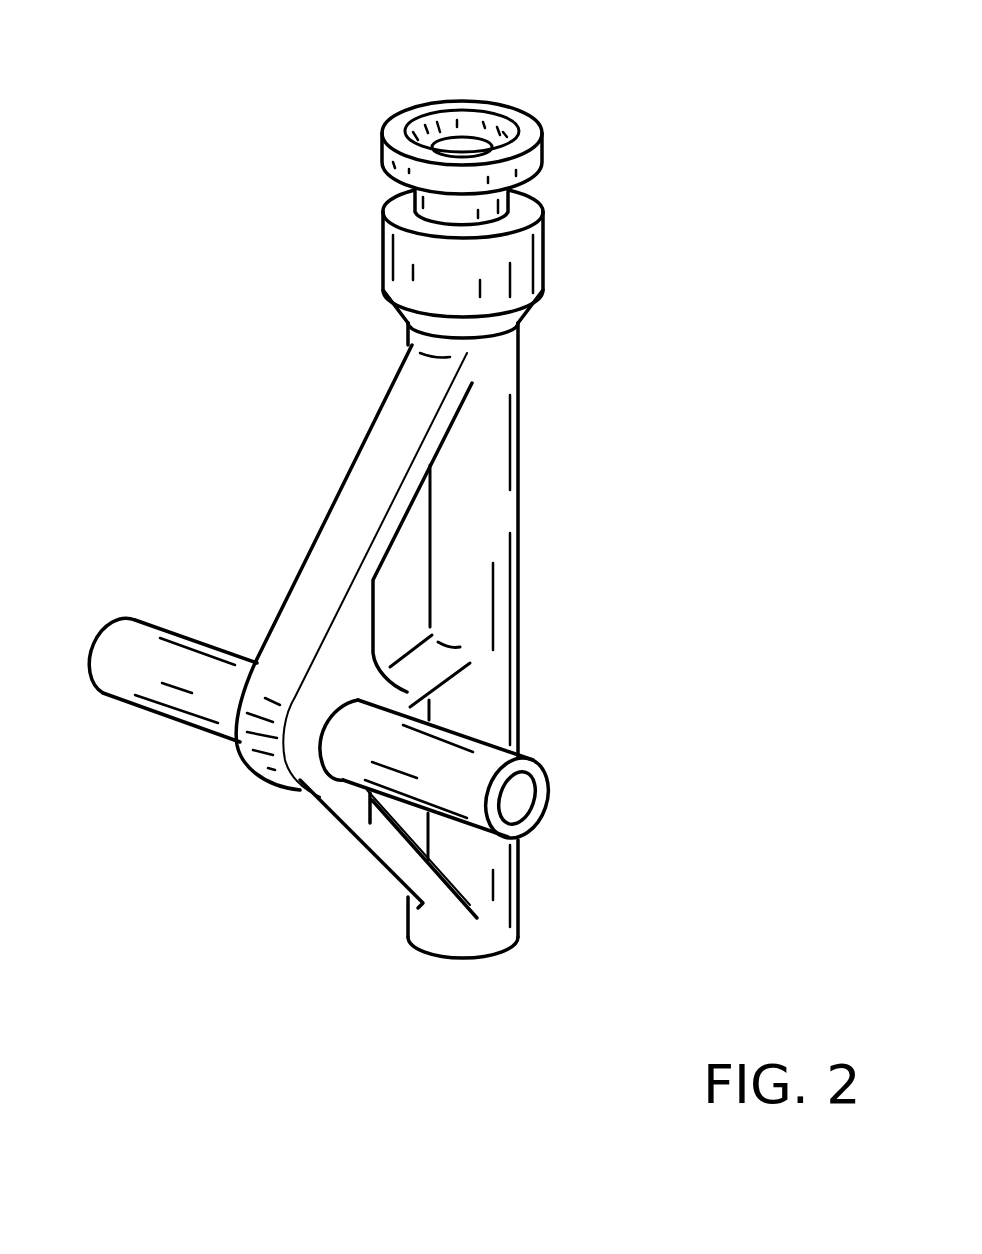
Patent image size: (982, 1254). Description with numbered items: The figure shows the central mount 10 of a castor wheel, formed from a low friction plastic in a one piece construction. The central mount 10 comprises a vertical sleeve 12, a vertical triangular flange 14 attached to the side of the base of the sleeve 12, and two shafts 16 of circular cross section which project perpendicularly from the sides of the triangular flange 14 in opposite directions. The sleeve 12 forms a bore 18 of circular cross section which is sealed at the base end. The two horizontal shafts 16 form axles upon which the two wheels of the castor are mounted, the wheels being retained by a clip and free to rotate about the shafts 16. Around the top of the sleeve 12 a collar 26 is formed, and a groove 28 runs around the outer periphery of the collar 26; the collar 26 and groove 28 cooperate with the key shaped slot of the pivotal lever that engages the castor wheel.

The central mount 10 is at (587, 650).
The vertical sleeve 12 is at (497, 457).
The vertical triangular flange 14 is at (302, 718).
The shafts 16 is at (130, 643).
The bore 18 is at (463, 147).
The collar 26 is at (412, 248).
The groove 28 is at (400, 190).